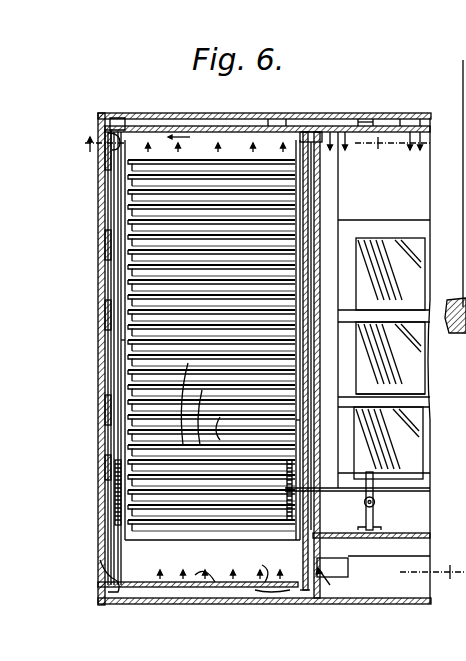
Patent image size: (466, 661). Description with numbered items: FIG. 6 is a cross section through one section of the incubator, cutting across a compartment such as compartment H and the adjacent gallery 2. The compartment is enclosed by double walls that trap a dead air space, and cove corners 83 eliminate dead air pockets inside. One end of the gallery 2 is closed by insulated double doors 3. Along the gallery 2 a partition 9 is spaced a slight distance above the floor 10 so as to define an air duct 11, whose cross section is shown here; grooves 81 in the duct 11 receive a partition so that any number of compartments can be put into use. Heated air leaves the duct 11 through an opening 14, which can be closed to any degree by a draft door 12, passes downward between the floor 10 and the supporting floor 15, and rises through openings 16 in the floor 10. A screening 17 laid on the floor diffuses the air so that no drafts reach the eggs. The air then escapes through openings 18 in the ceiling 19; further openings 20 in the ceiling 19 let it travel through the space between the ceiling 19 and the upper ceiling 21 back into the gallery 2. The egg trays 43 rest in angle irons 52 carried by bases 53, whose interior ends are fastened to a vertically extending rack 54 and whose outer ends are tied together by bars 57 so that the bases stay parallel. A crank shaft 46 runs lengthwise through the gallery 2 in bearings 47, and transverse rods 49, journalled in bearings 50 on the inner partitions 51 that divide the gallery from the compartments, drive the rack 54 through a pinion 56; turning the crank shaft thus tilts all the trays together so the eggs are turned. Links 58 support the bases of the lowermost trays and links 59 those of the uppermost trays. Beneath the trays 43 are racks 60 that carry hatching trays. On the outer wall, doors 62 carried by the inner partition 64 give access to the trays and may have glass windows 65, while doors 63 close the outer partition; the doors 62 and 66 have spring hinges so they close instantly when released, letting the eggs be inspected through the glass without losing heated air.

The gallery 2 is at (410, 203).
The double doors 3 is at (405, 372).
The partition 9 is at (412, 530).
The floor 10 is at (167, 605).
The air duct 11 is at (420, 560).
The draft doors 12 is at (84, 143).
The opening 14 is at (318, 577).
The supporting floor 15 is at (222, 604).
The openings 16 is at (100, 622).
The screening 17 is at (160, 582).
The openings 18 is at (136, 126).
The ceiling 19 is at (276, 126).
The openings 20 is at (352, 126).
The ceiling 21 is at (242, 113).
The trays 43 is at (290, 218).
The crank shaft 46 is at (374, 503).
The bearings 47 is at (366, 520).
The rods 49 is at (390, 488).
The bearings 50 is at (310, 478).
The inner partitions 51 is at (300, 195).
The angle irons 52 is at (290, 345).
The bases 53 is at (128, 240).
The rack 54 is at (112, 462).
The pinion 56 is at (170, 450).
The bars 57 is at (296, 300).
The links 58 is at (290, 400).
The links 59 is at (322, 150).
The racks 60 is at (100, 560).
The doors 62 is at (110, 185).
The doors 63 is at (104, 214).
The inner partition 64 is at (104, 162).
The glass windows 65 is at (112, 418).
The doors 66 is at (114, 493).
The grooves 81 is at (306, 600).
The cove corners 83 is at (116, 118).
The compartment H is at (118, 350).